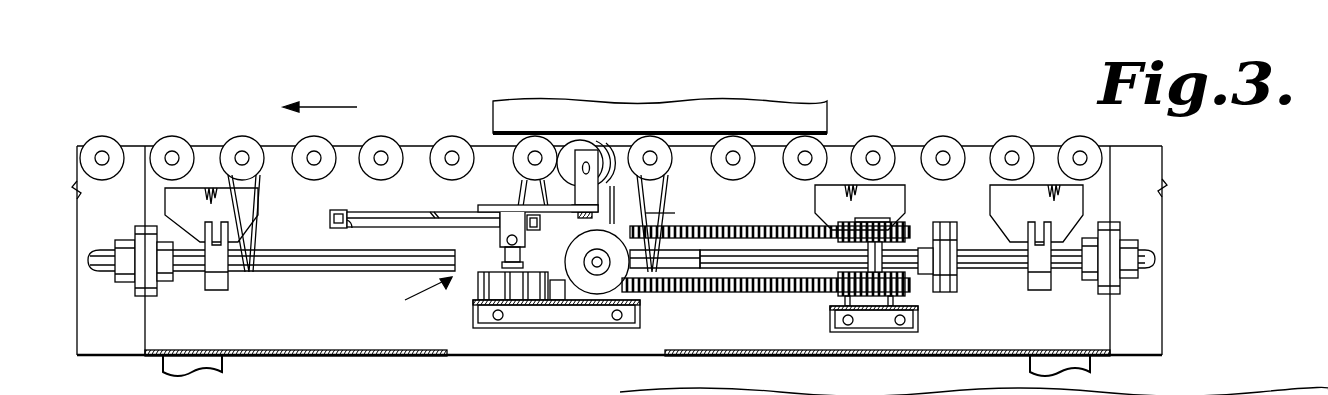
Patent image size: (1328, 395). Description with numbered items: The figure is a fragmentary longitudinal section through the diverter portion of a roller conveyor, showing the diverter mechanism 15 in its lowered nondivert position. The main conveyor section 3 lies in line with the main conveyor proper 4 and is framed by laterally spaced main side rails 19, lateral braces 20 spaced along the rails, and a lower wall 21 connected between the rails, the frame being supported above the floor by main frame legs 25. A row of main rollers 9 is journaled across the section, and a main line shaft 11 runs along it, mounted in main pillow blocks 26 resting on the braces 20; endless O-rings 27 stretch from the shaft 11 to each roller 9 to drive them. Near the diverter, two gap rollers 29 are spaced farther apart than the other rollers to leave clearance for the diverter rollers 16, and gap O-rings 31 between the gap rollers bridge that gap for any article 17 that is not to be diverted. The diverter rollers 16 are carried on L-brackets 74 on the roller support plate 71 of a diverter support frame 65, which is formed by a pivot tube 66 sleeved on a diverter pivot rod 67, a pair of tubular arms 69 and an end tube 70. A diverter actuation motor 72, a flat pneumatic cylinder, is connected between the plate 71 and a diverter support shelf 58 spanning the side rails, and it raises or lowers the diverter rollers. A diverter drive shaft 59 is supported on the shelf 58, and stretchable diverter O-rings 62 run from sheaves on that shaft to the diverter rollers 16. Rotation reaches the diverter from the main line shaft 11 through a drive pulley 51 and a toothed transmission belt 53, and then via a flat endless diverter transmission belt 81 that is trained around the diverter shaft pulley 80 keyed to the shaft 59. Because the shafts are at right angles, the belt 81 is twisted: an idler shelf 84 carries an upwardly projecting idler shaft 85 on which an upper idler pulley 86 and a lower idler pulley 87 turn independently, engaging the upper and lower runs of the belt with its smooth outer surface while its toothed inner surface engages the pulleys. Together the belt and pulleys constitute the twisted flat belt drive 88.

The main conveyor section 3 is at (568, 355).
The main conveyor proper 4 is at (100, 358).
The main rollers 9 is at (226, 136).
The main line shaft 11 is at (278, 276).
The diverter mechanism 15 is at (417, 292).
The diverter rollers 16 is at (578, 140).
The article 17 is at (752, 104).
The main side rails 19 is at (334, 356).
The lateral braces 20 is at (197, 224).
The lower wall 21 is at (407, 356).
The main frame legs 25 is at (224, 366).
The main pillow blocks 26 is at (217, 290).
The O-rings 27 is at (262, 222).
The gap rollers 29 is at (528, 140).
The gap O-rings 31 is at (620, 140).
The drive pulley 51 is at (940, 284).
The transmission belt 53 is at (942, 292).
The diverter support shelf 58 is at (642, 316).
The diverter drive shaft 59 is at (597, 268).
The diverter O-ring 62 is at (662, 213).
The diverter support frame 65 is at (497, 210).
The pivot tube 66 is at (352, 228).
The diverter pivot rod 67 is at (333, 215).
The tubular arms 69 is at (450, 210).
The end tube 70 is at (540, 230).
The roller support plate 71 is at (503, 234).
The diverter actuation motor 72 is at (476, 290).
The L-brackets 74 is at (590, 160).
The diverter shaft pulley 80 is at (575, 286).
The diverter transmission belt 81 is at (767, 290).
The idler shelf 84 is at (830, 320).
The idler shaft 85 is at (874, 265).
The upper idler pulley 86 is at (908, 228).
The lower idler pulley 87 is at (842, 296).
The twisted flat belt drive 88 is at (737, 226).